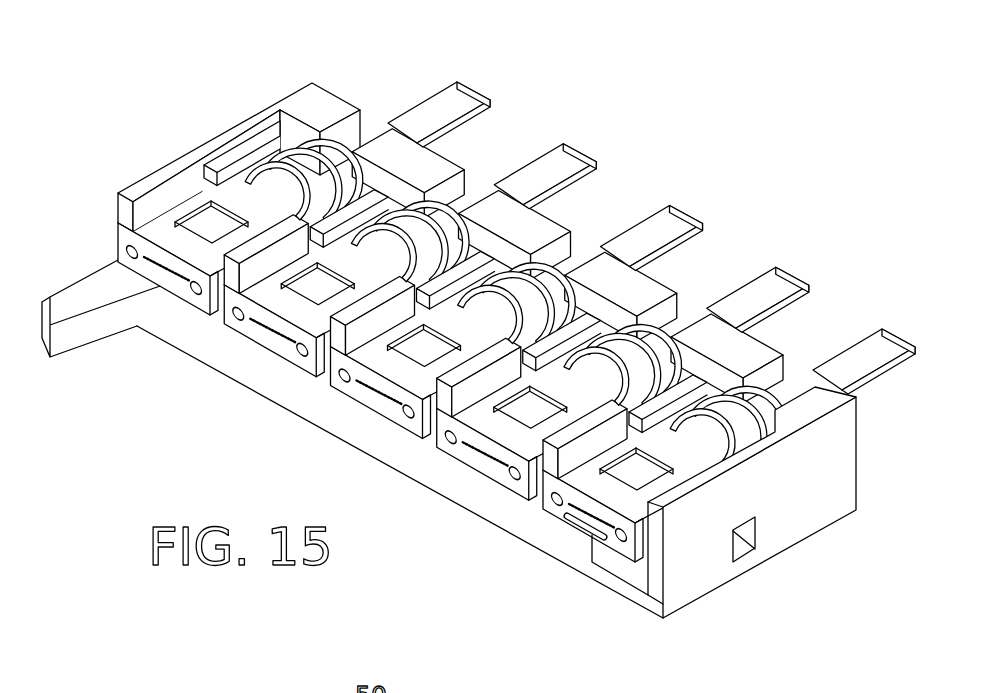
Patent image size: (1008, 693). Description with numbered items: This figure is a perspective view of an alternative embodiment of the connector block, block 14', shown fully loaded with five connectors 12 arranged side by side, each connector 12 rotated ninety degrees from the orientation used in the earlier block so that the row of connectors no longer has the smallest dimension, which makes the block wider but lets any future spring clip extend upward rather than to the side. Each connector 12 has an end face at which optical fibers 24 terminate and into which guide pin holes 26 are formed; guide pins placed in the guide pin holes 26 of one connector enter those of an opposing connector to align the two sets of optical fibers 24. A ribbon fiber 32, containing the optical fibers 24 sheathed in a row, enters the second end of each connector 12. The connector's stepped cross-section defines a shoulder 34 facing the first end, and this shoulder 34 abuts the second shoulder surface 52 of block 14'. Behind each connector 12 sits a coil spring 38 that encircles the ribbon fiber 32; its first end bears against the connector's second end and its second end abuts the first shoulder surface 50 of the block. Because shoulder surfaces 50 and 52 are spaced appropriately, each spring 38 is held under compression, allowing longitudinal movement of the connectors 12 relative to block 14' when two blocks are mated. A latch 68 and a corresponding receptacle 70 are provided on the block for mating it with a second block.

The connector 12 is at (340, 385).
The block 14' is at (496, 493).
The optical fibers 24 is at (577, 523).
The guide pin holes 26 is at (509, 473).
The ribbon fiber 32 is at (780, 272).
The shoulder 34 is at (212, 192).
The spring 38 is at (335, 173).
The first shoulder surface 50 is at (295, 130).
The second shoulder surface 52 is at (200, 160).
The latch 68 is at (95, 330).
The receptacle 70 is at (638, 577).